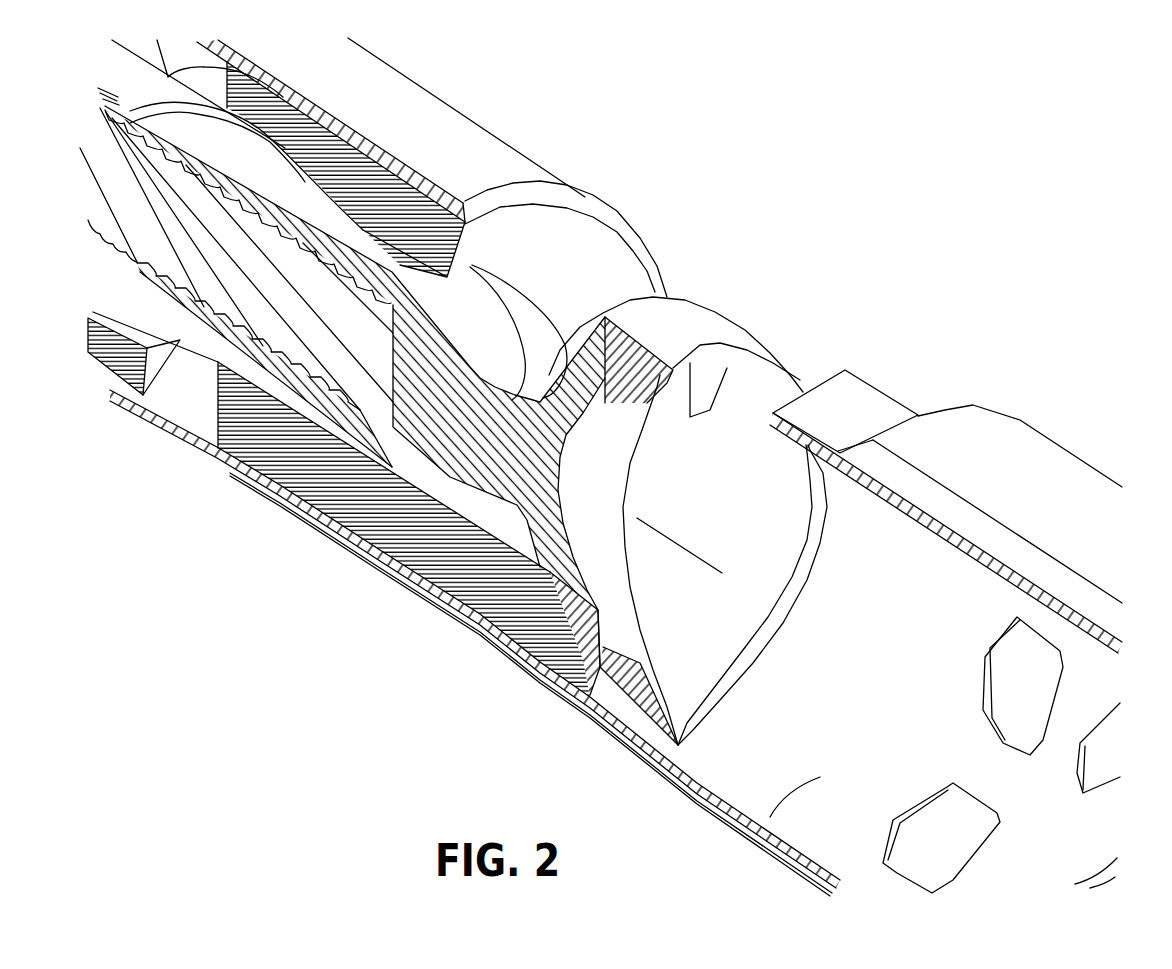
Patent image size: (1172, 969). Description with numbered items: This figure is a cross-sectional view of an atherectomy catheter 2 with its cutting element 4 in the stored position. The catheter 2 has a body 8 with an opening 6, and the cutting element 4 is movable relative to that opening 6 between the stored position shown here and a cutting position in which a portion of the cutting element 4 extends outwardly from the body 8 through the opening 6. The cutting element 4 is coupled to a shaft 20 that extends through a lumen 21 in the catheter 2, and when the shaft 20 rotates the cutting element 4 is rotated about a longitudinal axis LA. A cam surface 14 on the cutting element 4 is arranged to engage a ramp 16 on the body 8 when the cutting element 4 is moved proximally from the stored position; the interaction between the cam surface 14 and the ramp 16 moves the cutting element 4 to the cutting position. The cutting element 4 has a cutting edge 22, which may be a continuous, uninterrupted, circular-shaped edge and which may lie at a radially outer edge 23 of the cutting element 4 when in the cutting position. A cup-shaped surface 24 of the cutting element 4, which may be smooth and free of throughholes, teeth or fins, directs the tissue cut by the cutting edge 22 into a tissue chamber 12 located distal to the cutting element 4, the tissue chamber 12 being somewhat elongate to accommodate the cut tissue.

The atherectomy catheter 2 is at (912, 220).
The cutting element 4 is at (697, 320).
The opening 6 is at (585, 240).
The body 8 is at (448, 122).
The tissue chamber 12 is at (790, 808).
The cam surface 14 is at (565, 580).
The ramp 16 is at (565, 612).
The shaft 20 is at (300, 398).
The lumen 21 is at (130, 316).
The cutting edge 22 is at (770, 657).
The radially outer edge 23 is at (808, 568).
The cup-shaped surface 24 is at (762, 389).
The longitudinal axis LA is at (683, 547).